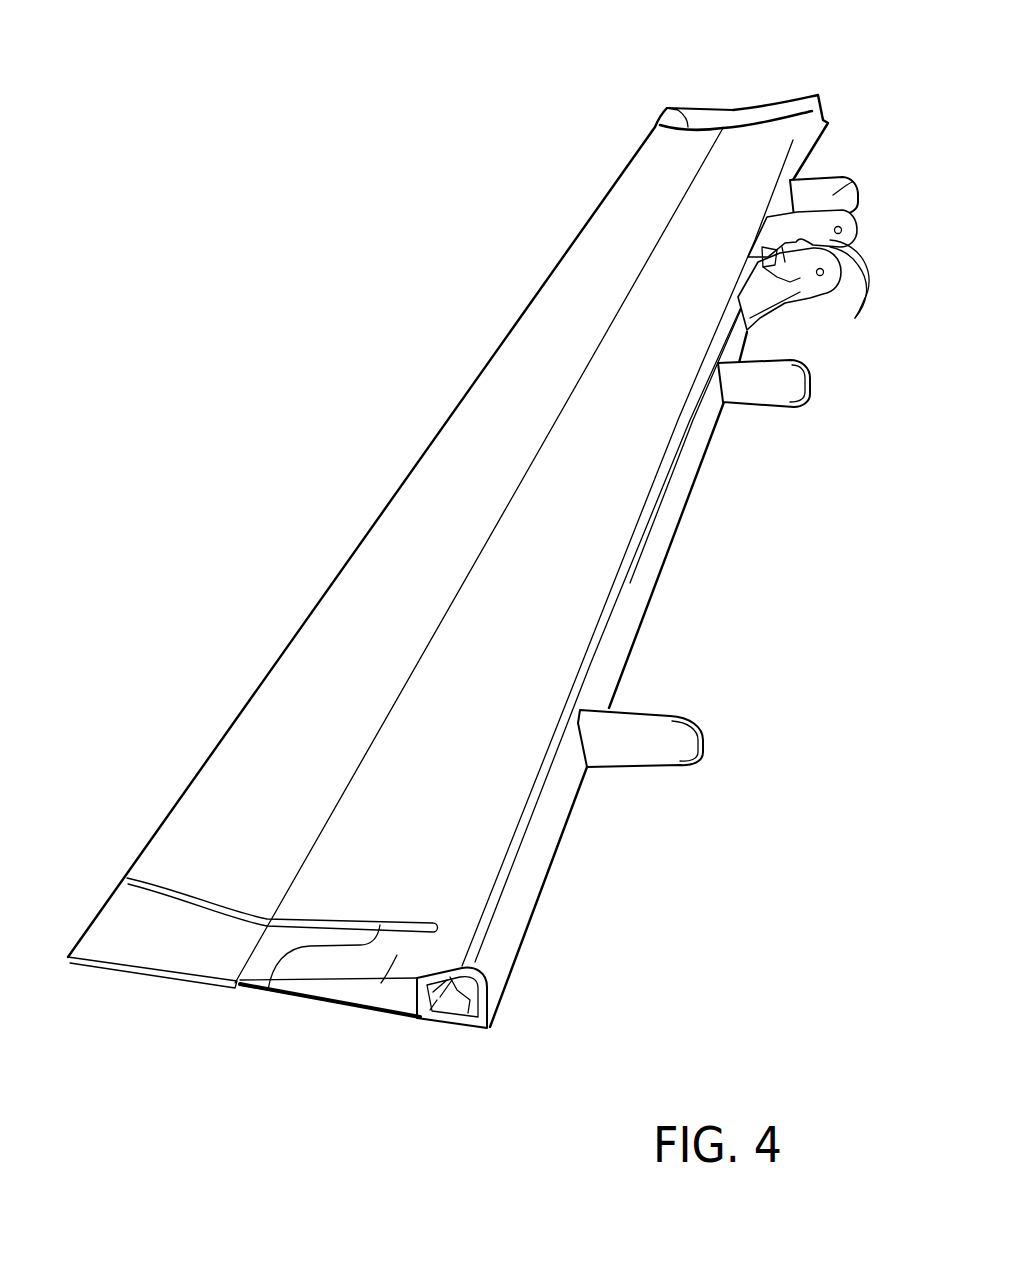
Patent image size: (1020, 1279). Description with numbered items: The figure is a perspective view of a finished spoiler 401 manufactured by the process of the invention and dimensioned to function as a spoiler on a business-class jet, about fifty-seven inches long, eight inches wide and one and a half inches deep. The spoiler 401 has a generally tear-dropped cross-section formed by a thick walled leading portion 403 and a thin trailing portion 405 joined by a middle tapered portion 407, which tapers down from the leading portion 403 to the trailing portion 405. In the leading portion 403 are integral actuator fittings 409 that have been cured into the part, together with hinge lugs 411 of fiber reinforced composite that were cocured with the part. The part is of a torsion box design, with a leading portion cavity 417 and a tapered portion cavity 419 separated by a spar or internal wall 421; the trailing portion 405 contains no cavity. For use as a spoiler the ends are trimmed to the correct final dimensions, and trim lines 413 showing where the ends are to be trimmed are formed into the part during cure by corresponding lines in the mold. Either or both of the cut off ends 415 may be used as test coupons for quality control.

The spoiler 401 is at (367, 442).
The leading portion 403 is at (672, 506).
The trailing portion 405 is at (333, 587).
The tapered portion 407 is at (438, 787).
The actuator fittings 409 is at (803, 270).
The hinge lugs 411 is at (852, 181).
The trim lines 413 is at (265, 989).
The cut off ends 415 is at (755, 112).
The leading portion cavity 417 is at (493, 997).
The tapered portion cavity 419 is at (413, 1018).
The spar 421 is at (468, 965).